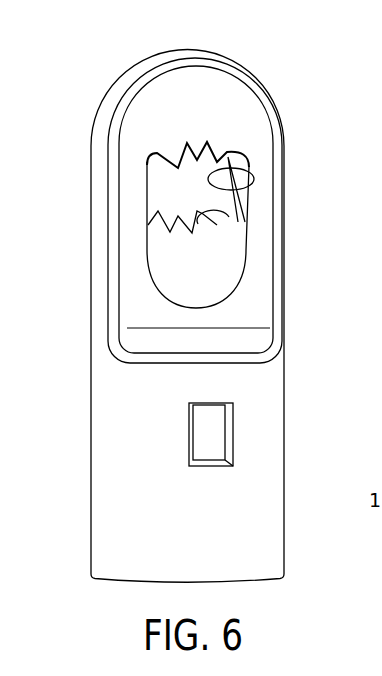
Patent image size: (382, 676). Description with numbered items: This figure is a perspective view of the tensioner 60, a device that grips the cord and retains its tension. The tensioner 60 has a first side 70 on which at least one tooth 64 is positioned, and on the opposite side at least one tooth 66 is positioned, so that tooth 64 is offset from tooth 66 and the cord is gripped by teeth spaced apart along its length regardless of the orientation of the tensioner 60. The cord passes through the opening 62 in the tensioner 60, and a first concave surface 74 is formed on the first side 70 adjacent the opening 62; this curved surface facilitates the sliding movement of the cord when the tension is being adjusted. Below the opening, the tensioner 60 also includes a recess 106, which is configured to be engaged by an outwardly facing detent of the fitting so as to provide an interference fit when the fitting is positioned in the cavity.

The tensioner 60 is at (244, 64).
The first side 70 is at (130, 204).
The first concave surface 74 is at (176, 270).
The tooth 64 is at (180, 165).
The opening 62 is at (228, 190).
The tooth 66 is at (230, 212).
The recess 106 is at (218, 437).